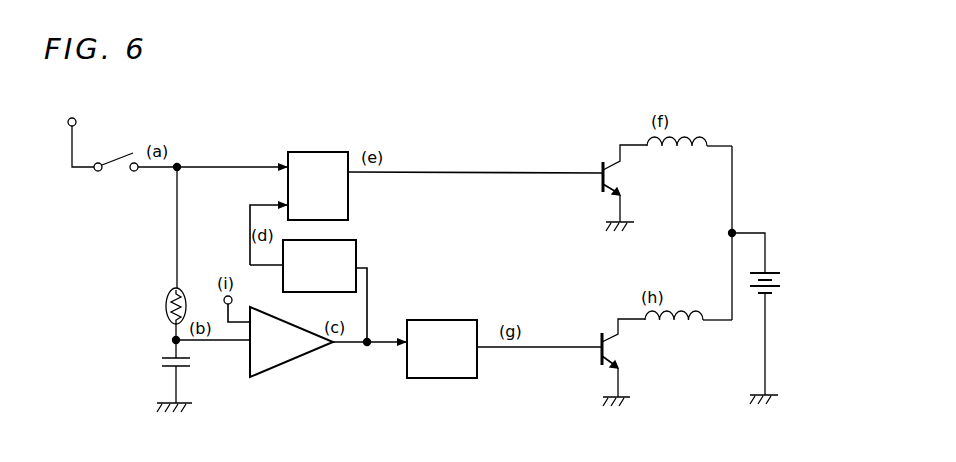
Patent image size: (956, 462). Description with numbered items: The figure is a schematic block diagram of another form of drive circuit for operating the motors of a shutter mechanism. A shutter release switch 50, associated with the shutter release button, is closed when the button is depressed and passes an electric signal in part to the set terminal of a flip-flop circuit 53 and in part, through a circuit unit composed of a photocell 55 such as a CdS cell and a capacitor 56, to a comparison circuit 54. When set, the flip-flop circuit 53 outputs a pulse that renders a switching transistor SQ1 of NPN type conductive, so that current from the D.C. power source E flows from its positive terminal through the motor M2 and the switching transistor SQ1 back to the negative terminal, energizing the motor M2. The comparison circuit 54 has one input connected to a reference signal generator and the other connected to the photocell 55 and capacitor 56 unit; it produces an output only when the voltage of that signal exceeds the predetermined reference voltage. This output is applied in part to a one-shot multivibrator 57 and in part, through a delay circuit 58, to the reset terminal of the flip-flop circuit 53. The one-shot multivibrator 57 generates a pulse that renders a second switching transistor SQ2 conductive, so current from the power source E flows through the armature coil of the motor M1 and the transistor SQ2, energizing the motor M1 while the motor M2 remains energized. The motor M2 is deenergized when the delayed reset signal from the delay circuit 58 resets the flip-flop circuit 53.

The shutter release switch 50 is at (133, 155).
The flip-flop circuit 53 is at (330, 152).
The comparison circuit 54 is at (293, 363).
The photocell 55 is at (165, 300).
The capacitor 56 is at (162, 362).
The one-shot multivibrator 57 is at (442, 380).
The delay circuit 58 is at (357, 252).
The switching transistor SQ1 is at (600, 178).
The second switching transistor SQ2 is at (597, 353).
The motor M1 is at (677, 311).
The motor M2 is at (688, 136).
The D.C. power source E is at (778, 280).